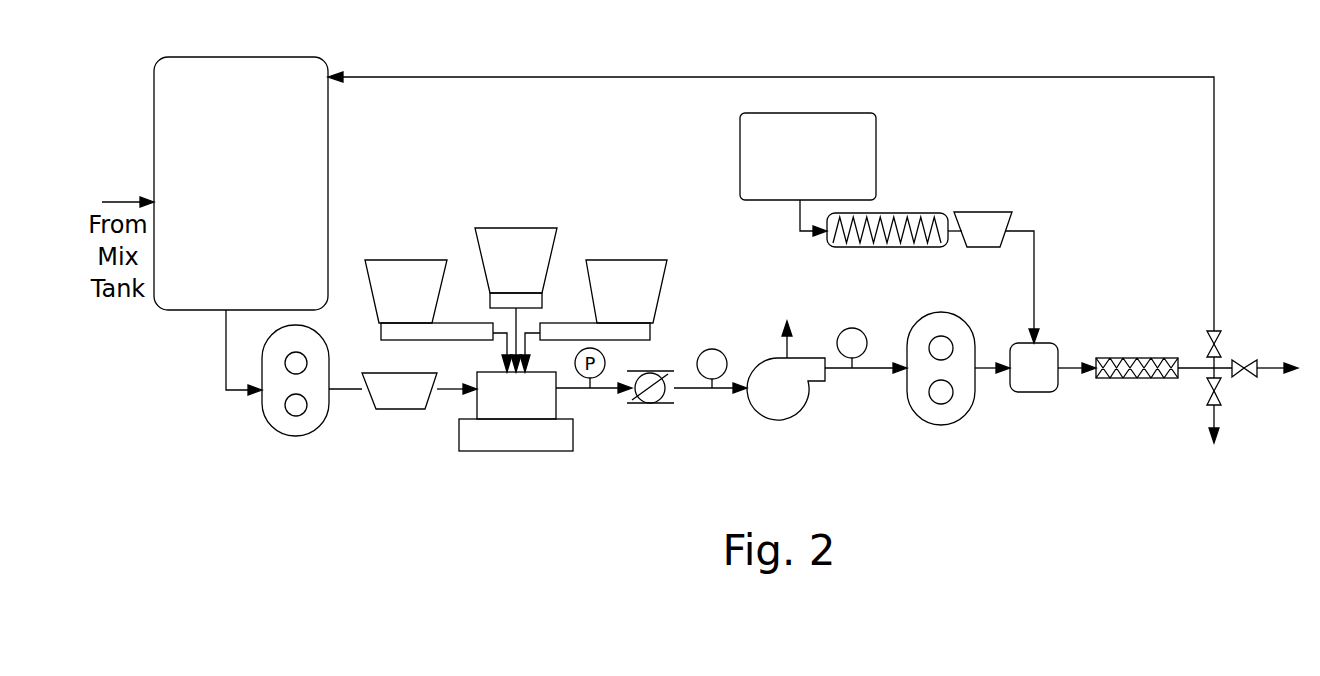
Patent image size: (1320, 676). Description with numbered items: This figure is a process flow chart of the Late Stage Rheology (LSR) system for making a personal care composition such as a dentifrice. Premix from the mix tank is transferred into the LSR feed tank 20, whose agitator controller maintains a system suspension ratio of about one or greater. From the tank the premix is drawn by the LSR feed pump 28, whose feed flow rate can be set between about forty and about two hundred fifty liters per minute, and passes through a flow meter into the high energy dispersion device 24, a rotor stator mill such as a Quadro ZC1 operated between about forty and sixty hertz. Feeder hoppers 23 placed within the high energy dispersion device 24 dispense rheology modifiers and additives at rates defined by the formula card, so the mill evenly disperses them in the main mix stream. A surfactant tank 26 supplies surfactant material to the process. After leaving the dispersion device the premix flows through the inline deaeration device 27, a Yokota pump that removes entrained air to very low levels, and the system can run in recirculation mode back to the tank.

The LSR feed tank 20 is at (212, 178).
The feeder hoppers 23 is at (608, 258).
The high energy dispersion device 24 is at (518, 451).
The surfactant tank 26 is at (822, 165).
The inline deaeration device 27 is at (778, 421).
The LSR feed pump 28 is at (300, 436).